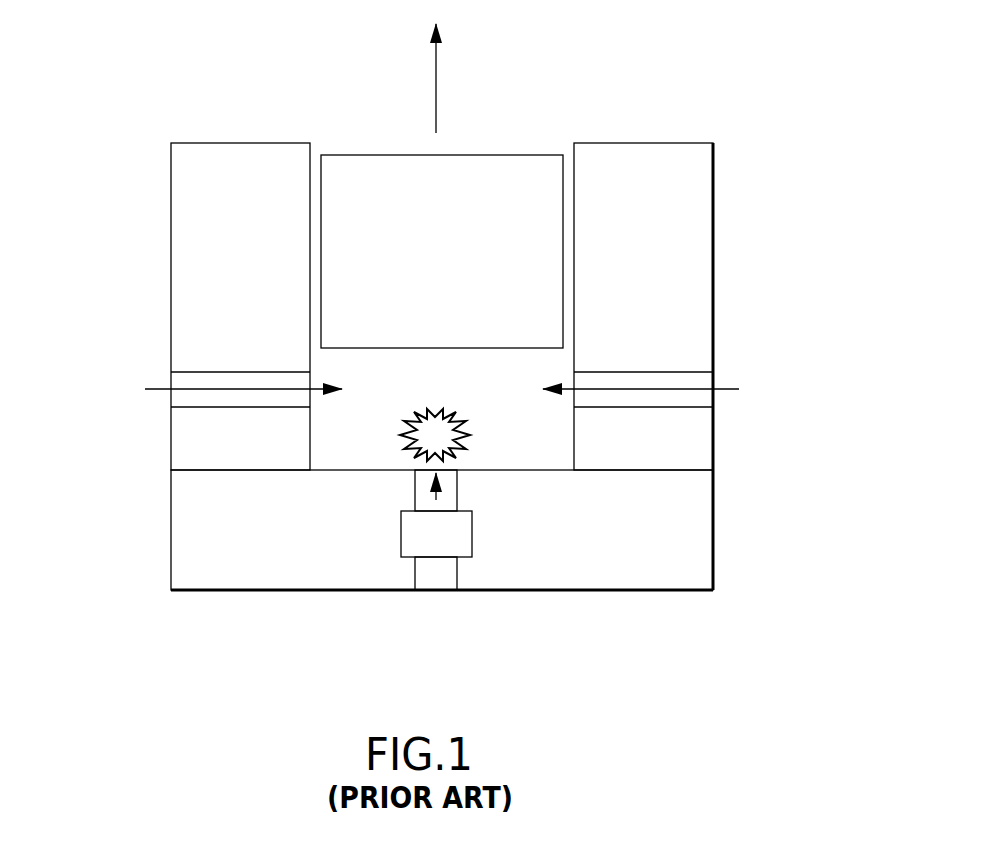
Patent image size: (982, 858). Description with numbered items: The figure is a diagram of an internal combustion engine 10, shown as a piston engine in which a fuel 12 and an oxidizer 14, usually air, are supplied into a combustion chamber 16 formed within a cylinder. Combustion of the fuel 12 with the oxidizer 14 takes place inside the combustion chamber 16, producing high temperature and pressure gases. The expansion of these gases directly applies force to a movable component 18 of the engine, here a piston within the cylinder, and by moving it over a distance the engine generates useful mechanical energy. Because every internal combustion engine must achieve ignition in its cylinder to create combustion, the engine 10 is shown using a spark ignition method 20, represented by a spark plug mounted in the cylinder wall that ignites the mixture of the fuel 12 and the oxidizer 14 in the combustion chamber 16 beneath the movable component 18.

The internal combustion engine 10 is at (117, 215).
The fuel 12 is at (160, 389).
The oxidizer 14 is at (724, 389).
The combustion chamber 16 is at (498, 407).
The movable component 18 is at (501, 271).
The spark ignition method 20 is at (400, 558).